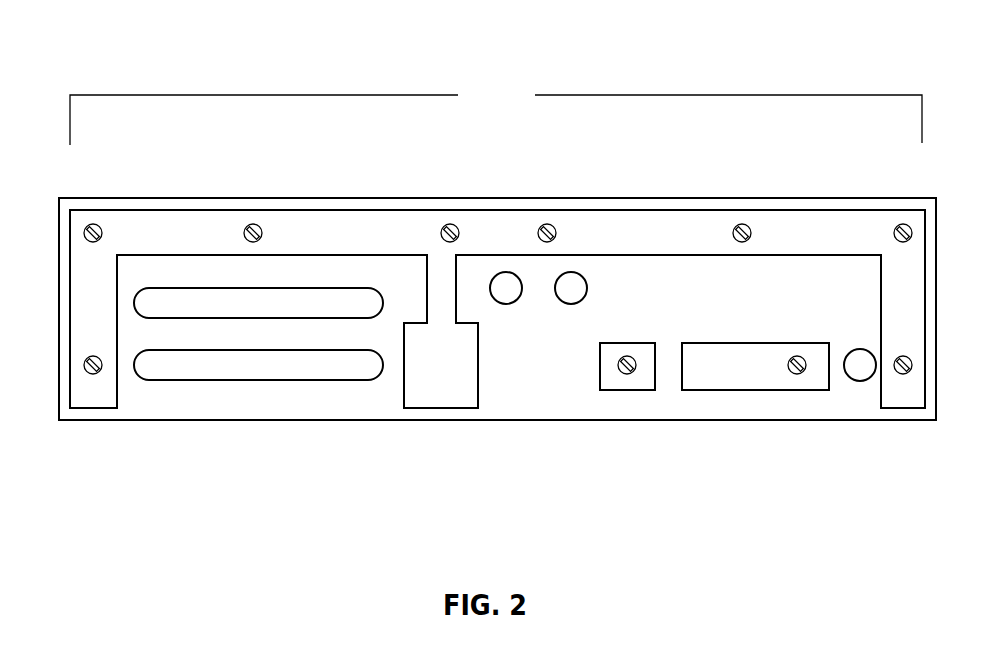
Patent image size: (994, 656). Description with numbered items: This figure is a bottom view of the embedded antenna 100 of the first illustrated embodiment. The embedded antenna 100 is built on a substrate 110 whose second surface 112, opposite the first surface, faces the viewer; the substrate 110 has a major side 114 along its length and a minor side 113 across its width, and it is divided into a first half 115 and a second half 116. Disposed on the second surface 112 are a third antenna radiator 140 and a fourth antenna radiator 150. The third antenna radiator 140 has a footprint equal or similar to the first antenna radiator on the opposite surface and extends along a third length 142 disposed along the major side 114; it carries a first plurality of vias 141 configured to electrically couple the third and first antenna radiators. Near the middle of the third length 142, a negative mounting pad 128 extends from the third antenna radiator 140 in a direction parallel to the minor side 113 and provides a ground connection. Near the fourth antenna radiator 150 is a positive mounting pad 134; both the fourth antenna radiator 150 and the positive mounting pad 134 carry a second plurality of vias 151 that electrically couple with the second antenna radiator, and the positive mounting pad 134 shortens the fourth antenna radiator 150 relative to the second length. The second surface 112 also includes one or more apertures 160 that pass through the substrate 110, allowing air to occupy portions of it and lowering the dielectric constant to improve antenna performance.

The embedded antenna 100 is at (128, 42).
The third length 142 is at (496, 113).
The major side 114 is at (80, 198).
The third antenna radiator 140 is at (502, 236).
The first plurality of vias 141 is at (255, 224).
The substrate 110 is at (175, 393).
The second surface 112 is at (577, 392).
The second half 116 is at (290, 397).
The one or more apertures 160 is at (327, 288).
The negative mounting pad 128 is at (433, 390).
The positive mounting pad 134 is at (645, 390).
The fourth antenna radiator 150 is at (770, 391).
The second plurality of vias 151 is at (630, 357).
The minor side 113 is at (60, 375).
The first half 115 is at (856, 407).